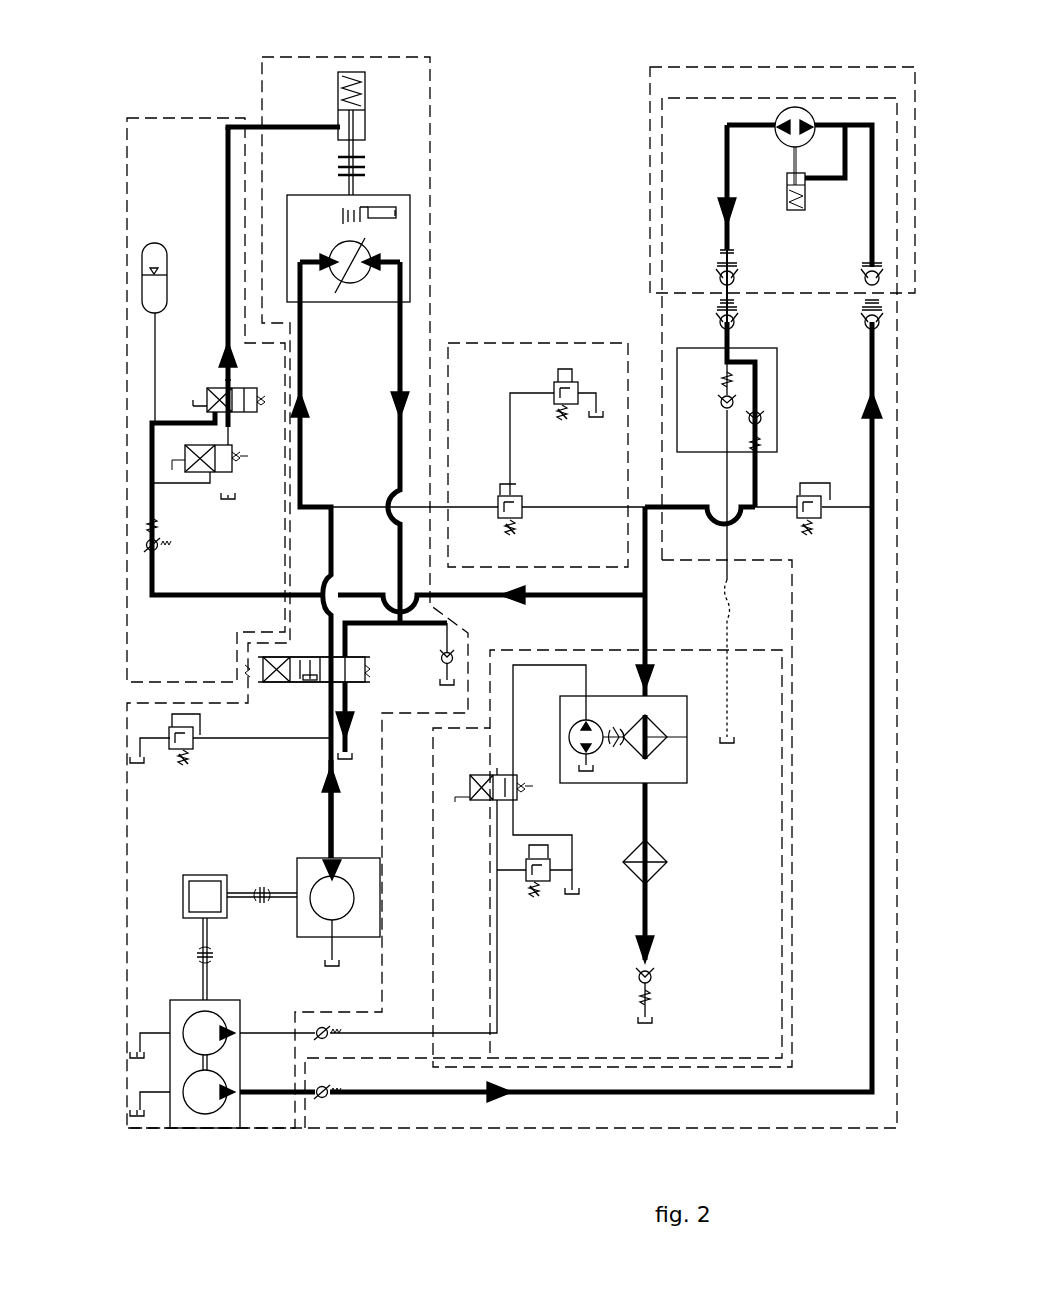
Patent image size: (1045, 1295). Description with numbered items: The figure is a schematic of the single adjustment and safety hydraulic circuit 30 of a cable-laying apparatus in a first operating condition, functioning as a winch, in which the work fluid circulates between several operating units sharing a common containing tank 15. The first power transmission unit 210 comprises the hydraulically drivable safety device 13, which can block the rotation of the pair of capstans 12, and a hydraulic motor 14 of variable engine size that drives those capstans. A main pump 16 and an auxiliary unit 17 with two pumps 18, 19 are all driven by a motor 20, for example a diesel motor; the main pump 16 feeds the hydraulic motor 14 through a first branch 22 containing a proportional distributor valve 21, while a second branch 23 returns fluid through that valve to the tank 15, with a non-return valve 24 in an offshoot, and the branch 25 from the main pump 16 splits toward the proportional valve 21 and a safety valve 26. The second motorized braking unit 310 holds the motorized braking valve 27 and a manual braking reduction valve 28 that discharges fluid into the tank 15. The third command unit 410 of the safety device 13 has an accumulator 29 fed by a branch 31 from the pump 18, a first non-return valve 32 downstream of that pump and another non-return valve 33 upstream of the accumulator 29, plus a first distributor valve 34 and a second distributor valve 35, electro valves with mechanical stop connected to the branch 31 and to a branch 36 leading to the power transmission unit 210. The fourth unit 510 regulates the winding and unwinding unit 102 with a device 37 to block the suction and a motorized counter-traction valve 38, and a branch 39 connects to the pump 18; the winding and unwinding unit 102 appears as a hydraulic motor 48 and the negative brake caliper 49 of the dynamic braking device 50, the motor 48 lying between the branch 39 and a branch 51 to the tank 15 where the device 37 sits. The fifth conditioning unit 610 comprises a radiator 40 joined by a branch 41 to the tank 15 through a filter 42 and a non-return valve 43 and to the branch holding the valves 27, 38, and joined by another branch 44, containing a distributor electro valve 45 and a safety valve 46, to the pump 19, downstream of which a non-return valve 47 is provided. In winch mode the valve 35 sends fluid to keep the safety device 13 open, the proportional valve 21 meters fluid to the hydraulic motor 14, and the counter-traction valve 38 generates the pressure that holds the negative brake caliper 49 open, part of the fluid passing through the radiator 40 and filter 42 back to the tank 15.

The capstans 12 is at (366, 166).
The safety device 13 is at (358, 127).
The hydraulic motor 14 is at (386, 236).
The containing tank 15 is at (232, 502).
The main pump 16 is at (313, 870).
The auxiliary unit 17 is at (182, 1010).
The pump 18 is at (204, 1100).
The pump 19 is at (198, 1030).
The motor 20 is at (206, 892).
The distributor valve 21 is at (265, 680).
The first branch 22 is at (301, 356).
The second branch 23 is at (400, 362).
The non-return valve 24 is at (440, 660).
The branch 25 is at (328, 815).
The safety valve 26 is at (176, 738).
The motorized braking valve 27 is at (514, 510).
The braking reduction valve 28 is at (567, 372).
The accumulator 29 is at (156, 262).
The adjustment and safety hydraulic circuit 30 is at (232, 98).
The branch 31 is at (150, 497).
The first non-return valve 32 is at (321, 1100).
The non-return valve 33 is at (160, 548).
The first distributor valve 34 is at (190, 458).
The second distributor valve 35 is at (215, 400).
The branch 36 is at (228, 176).
The device to block the suction 37 is at (767, 372).
The motorized counter-traction valve 38 is at (805, 494).
The branch 39 is at (880, 772).
The radiator 40 is at (667, 770).
The branch 41 is at (648, 830).
The filter 42 is at (652, 866).
The non-return valve 43 is at (652, 977).
The branch 44 is at (514, 740).
The distributor valve 45 is at (478, 786).
The safety valve 46 is at (540, 884).
The non-return valve 47 is at (320, 1028).
The hydraulic motor 48 is at (796, 126).
The negative brake caliper 49 is at (786, 178).
The dynamic braking device 50 is at (818, 208).
The branch 51 is at (726, 162).
The winding and unwinding unit 102 is at (643, 133).
The first power transmission unit 210 is at (435, 112).
The second motorized braking unit 310 is at (500, 328).
The third command unit 410 is at (120, 153).
The fourth unit 510 is at (655, 308).
The fifth conditioning unit 610 is at (760, 645).